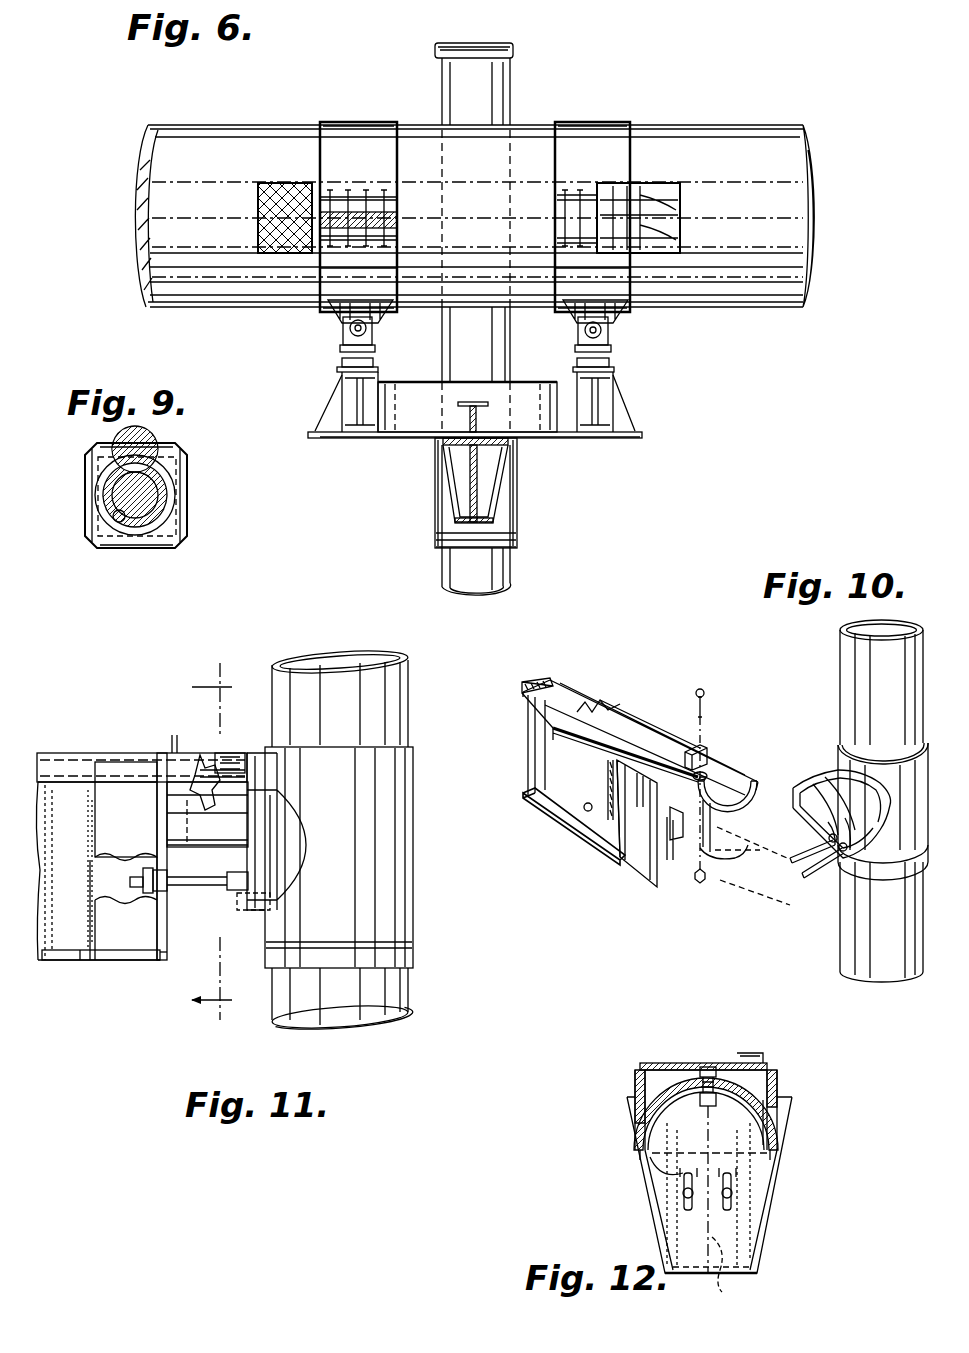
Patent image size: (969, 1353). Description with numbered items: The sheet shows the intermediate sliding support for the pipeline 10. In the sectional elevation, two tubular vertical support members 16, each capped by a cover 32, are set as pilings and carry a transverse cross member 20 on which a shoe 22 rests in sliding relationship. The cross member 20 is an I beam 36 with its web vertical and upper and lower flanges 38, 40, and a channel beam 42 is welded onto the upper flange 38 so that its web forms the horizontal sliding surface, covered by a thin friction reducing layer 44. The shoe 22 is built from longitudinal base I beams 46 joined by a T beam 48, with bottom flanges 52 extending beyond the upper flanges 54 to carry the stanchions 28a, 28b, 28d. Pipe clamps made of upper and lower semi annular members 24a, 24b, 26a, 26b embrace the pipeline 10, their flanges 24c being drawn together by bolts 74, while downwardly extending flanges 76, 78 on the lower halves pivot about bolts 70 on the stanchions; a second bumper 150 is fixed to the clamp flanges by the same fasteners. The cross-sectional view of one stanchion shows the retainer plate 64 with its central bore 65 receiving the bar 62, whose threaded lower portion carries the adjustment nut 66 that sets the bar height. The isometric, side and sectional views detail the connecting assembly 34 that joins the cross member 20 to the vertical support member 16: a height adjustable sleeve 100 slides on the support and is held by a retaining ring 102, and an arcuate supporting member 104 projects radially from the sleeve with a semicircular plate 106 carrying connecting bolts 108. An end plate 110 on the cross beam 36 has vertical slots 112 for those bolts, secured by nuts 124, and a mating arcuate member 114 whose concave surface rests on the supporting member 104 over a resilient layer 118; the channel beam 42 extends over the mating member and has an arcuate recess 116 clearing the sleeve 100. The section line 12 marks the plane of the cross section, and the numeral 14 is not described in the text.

In FIG. 6, the pipeline 10 is at (750, 142).
In FIG. 11, the section line 12 is at (224, 845).
In FIG. 6, the hanger assembly 14 is at (618, 495).
In FIG. 6, the vertical support member 16 is at (498, 74).
In FIG. 11, the vertical support member 16 is at (392, 685).
In FIG. 10, the vertical support member 16 is at (858, 657).
In FIG. 6, the cross member 20 is at (522, 513).
In FIG. 6, the shoe 22 is at (652, 400).
In FIG. 6, the upper semi annular member 24a is at (348, 136).
In FIG. 6, the lower semi annular member 24b is at (330, 268).
In FIG. 6, the clamp flange 24c is at (313, 230).
In FIG. 6, the upper semi annular member 26a is at (582, 136).
In FIG. 6, the lower semi annular member 26b is at (612, 276).
In FIG. 9, the stanchion 28a is at (200, 530).
In FIG. 6, the stanchion 28b is at (345, 392).
In FIG. 6, the stanchion 28d is at (608, 392).
In FIG. 6, the cover 32 is at (490, 45).
In FIG. 11, the connecting assembly 34 is at (170, 1015).
In FIG. 10, the connecting assembly 34 is at (710, 928).
In FIG. 12, the connecting assembly 34 is at (805, 1098).
In FIG. 6, the I beam 36 is at (470, 495).
In FIG. 11, the I beam 36 is at (64, 950).
In FIG. 10, the I beam 36 is at (575, 797).
In FIG. 12, the I beam 36 is at (720, 1278).
In FIG. 6, the upper flange 38 is at (468, 452).
In FIG. 11, the upper flange 38 is at (48, 758).
In FIG. 10, the upper flange 38 is at (524, 695).
In FIG. 6, the lower flange 40 is at (466, 521).
In FIG. 11, the lower flange 40 is at (98, 960).
In FIG. 10, the lower flange 40 is at (526, 792).
In FIG. 6, the channel beam 42 is at (440, 443).
In FIG. 11, the channel beam 42 is at (75, 768).
In FIG. 10, the channel beam 42 is at (675, 705).
In FIG. 12, the channel beam 42 is at (638, 1083).
In FIG. 12, the friction reducing layer 44 is at (660, 1060).
In FIG. 6, the base I beam 46 is at (555, 418).
In FIG. 6, the T beam 48 is at (478, 400).
In FIG. 6, the bottom flange 52 is at (335, 440).
In FIG. 6, the upper flange 54 is at (412, 386).
In FIG. 9, the bar 62 is at (124, 522).
In FIG. 9, the retainer plate 64 is at (190, 470).
In FIG. 9, the central bore 65 is at (98, 470).
In FIG. 9, the adjustment nut 66 is at (155, 470).
In FIG. 6, the bolt 70 is at (345, 326).
In FIG. 6, the bolt 74 is at (366, 194).
In FIG. 6, the downwardly extending flange 76 is at (320, 312).
In FIG. 6, the downwardly extending flange 78 is at (632, 310).
In FIG. 11, the height adjustable sleeve 100 is at (410, 850).
In FIG. 10, the height adjustable sleeve 100 is at (878, 865).
In FIG. 11, the retaining ring 102 is at (410, 955).
In FIG. 10, the retaining ring 102 is at (862, 875).
In FIG. 11, the arcuate supporting member 104 is at (282, 786).
In FIG. 10, the arcuate supporting member 104 is at (803, 782).
In FIG. 12, the arcuate supporting member 104 is at (755, 1137).
In FIG. 11, the semicircular plate 106 is at (232, 910).
In FIG. 10, the semicircular plate 106 is at (828, 825).
In FIG. 11, the connecting bolt 108 is at (210, 888).
In FIG. 10, the connecting bolt 108 is at (802, 876).
In FIG. 12, the connecting bolt 108 is at (722, 1197).
In FIG. 11, the end plate 110 is at (170, 952).
In FIG. 10, the end plate 110 is at (650, 870).
In FIG. 12, the end plate 110 is at (752, 1220).
In FIG. 10, the vertical slot 112 is at (670, 860).
In FIG. 12, the vertical slot 112 is at (730, 1180).
In FIG. 11, the mating arcuate member 114 is at (202, 832).
In FIG. 10, the mating arcuate member 114 is at (752, 815).
In FIG. 12, the mating arcuate member 114 is at (638, 1135).
In FIG. 10, the arcuate recess 116 is at (735, 778).
In FIG. 11, the resilient layer 118 is at (208, 752).
In FIG. 10, the resilient layer 118 is at (723, 822).
In FIG. 12, the resilient layer 118 is at (715, 1168).
In FIG. 11, the nut 124 is at (226, 752).
In FIG. 10, the nut 124 is at (712, 678).
In FIG. 12, the nut 124 is at (708, 1065).
In FIG. 6, the second bumper 150 is at (683, 190).